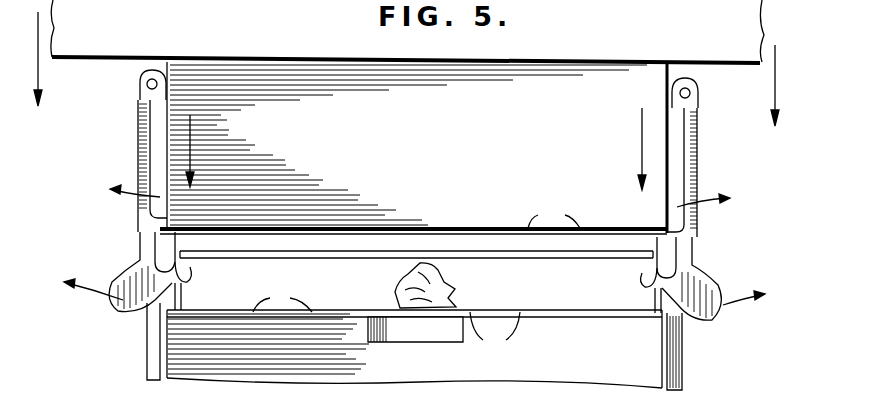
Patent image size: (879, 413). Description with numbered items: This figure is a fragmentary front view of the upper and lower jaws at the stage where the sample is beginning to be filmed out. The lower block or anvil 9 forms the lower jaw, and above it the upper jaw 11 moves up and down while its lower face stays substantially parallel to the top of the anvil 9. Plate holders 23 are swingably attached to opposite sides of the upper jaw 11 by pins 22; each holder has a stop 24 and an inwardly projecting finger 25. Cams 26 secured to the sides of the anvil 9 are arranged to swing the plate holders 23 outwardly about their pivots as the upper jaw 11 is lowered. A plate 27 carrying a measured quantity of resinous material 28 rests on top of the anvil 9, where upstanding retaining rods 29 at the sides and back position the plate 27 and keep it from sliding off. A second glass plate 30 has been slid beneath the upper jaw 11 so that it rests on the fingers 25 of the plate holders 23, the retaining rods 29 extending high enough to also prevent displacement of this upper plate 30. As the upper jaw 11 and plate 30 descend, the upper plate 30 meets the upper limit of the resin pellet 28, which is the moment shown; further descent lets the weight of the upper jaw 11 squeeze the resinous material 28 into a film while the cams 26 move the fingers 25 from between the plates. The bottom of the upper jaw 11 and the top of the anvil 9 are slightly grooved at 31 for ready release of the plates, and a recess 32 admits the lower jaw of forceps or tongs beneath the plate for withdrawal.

The anvil 9 is at (414, 349).
The upper jaw 11 is at (417, 147).
The pins 22 is at (146, 87).
The plate holders 23 is at (140, 239).
The stops 24 is at (170, 226).
The fingers 25 is at (192, 268).
The cams 26 is at (147, 353).
The plate 27 is at (574, 310).
The resinous material 28 is at (446, 290).
The retaining rods 29 is at (178, 292).
The second glass plate 30 is at (416, 267).
The grooves 31 is at (416, 275).
The recess 32 is at (453, 332).